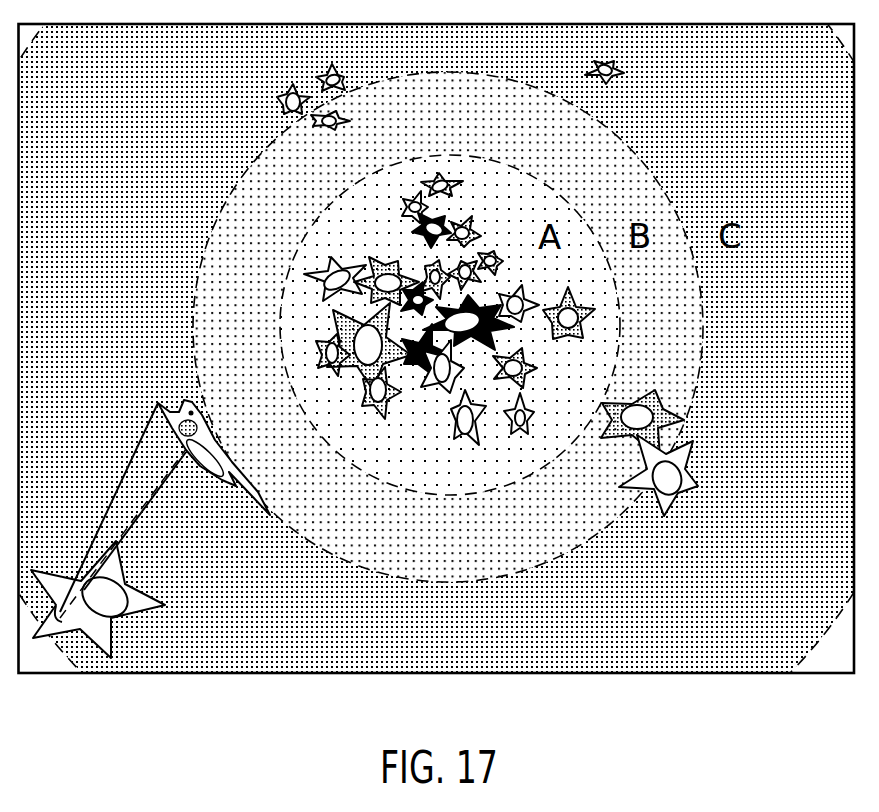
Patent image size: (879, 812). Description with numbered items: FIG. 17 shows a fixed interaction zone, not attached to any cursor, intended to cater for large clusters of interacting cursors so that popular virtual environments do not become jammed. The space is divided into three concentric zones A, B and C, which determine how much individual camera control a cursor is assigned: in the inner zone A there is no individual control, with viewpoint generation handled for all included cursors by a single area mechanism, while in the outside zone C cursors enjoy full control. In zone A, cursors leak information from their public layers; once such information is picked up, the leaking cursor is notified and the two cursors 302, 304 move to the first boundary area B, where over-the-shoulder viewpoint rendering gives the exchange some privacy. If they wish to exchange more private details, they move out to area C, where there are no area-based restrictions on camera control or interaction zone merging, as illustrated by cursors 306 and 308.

The cursor 302 is at (672, 401).
The cursor 304 is at (684, 484).
The cursor 306 is at (158, 410).
The cursor 308 is at (150, 601).